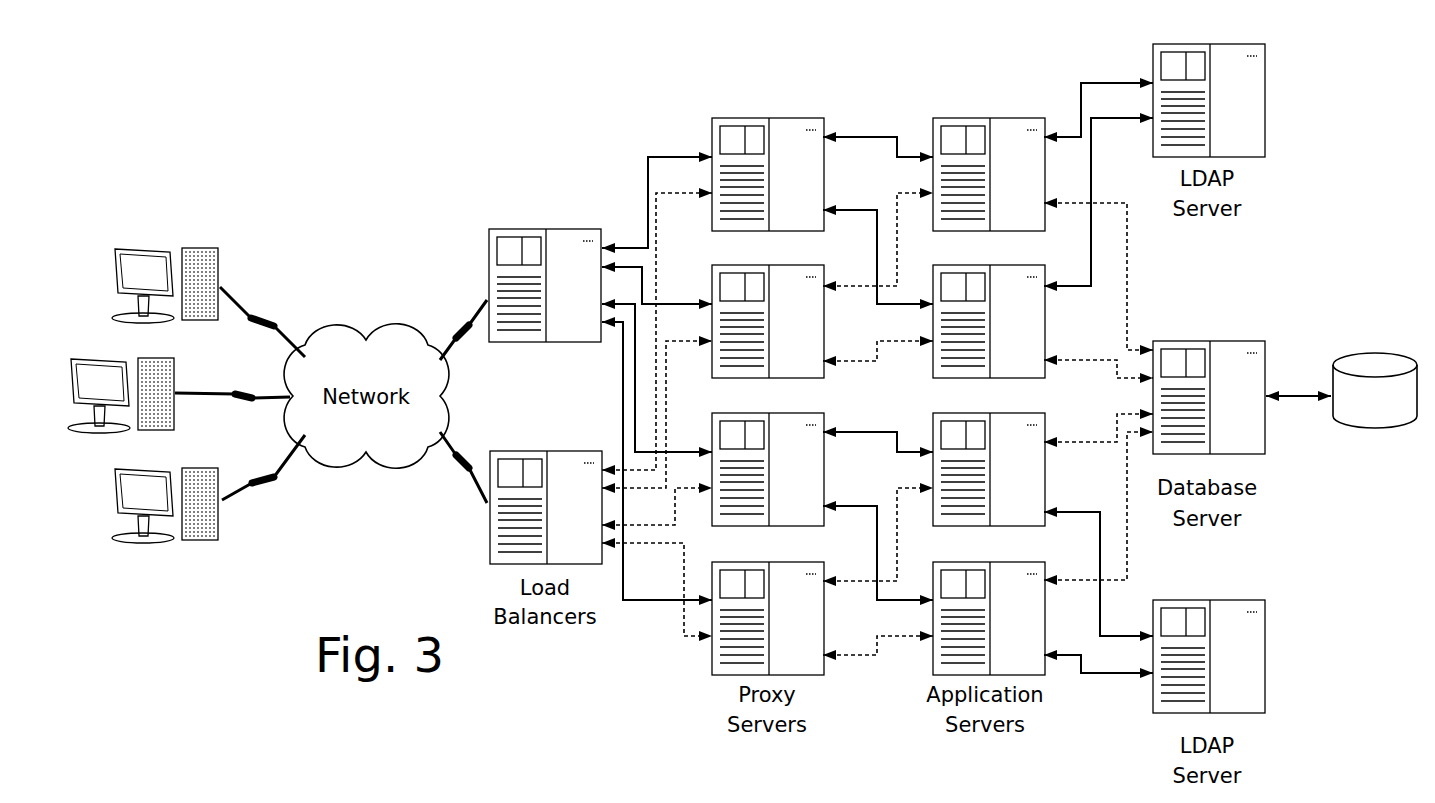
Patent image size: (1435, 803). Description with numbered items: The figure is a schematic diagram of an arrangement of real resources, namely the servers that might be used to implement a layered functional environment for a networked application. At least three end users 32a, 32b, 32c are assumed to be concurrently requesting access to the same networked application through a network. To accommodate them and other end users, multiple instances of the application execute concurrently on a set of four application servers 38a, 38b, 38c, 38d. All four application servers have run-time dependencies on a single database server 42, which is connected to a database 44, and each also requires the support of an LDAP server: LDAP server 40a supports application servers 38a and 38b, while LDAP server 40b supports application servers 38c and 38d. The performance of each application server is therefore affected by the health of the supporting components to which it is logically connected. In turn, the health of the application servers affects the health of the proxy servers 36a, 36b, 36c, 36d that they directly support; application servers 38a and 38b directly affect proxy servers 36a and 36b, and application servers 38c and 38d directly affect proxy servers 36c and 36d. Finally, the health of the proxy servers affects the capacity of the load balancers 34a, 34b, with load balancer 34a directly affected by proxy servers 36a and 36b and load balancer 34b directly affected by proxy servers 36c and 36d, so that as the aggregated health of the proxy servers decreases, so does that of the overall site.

The end user 32a is at (165, 271).
The end user 32b is at (101, 358).
The end user 32c is at (165, 492).
The load balancer 34a is at (566, 227).
The load balancer 34b is at (548, 450).
The proxy server 36a is at (820, 118).
The proxy server 36b is at (790, 307).
The proxy server 36c is at (812, 414).
The proxy server 36d is at (790, 604).
The application server 38a is at (992, 118).
The application server 38b is at (1030, 265).
The application server 38c is at (1015, 455).
The application server 38d is at (1030, 562).
The LDAP server 40a is at (1243, 43).
The LDAP server 40b is at (1232, 640).
The database server 42 is at (1209, 382).
The database 44 is at (1378, 352).